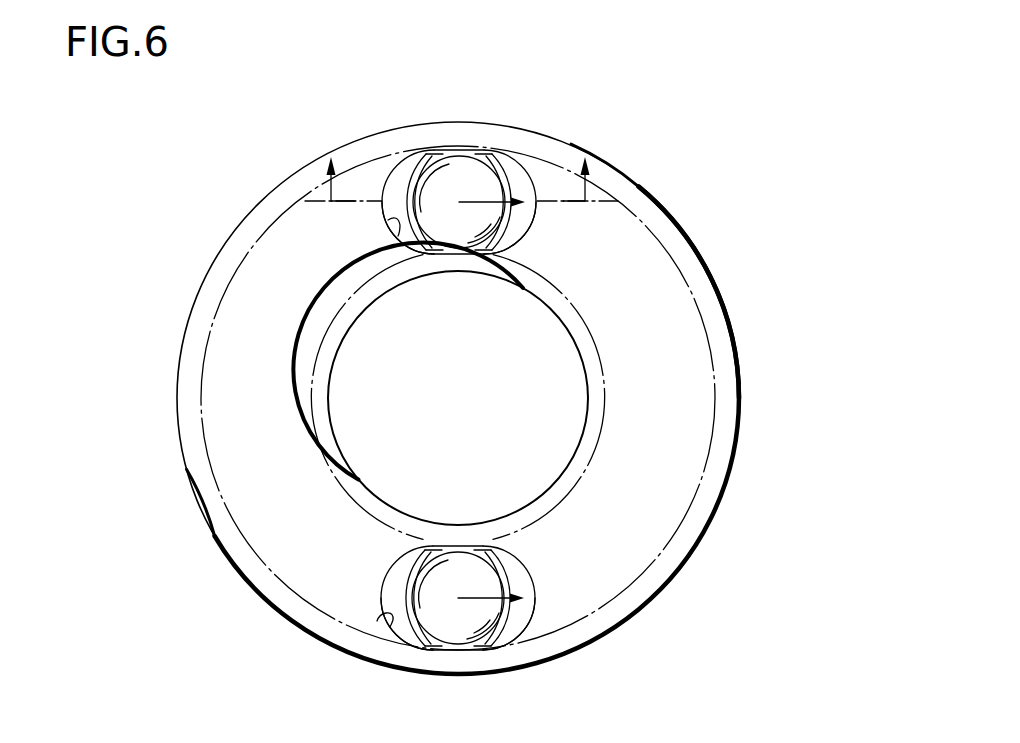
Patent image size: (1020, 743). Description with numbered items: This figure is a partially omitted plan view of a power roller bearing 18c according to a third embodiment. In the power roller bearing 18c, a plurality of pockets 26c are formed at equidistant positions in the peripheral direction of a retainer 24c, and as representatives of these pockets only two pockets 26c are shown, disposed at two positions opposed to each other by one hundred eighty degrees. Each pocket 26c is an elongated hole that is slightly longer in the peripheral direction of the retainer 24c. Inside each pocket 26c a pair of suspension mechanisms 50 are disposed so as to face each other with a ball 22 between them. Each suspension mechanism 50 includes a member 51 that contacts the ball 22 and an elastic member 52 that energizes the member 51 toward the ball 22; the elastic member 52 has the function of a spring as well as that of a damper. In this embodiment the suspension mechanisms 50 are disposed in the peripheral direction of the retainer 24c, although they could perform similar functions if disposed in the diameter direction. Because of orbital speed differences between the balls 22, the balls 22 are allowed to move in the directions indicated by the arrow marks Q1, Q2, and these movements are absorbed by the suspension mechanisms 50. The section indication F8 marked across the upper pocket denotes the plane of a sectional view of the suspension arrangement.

The power roller bearing 18c is at (728, 182).
The ball 22 is at (467, 167).
The retainer 24c is at (728, 488).
The pocket 26c is at (388, 220).
The suspension mechanism 50 is at (389, 172).
The member 51 is at (408, 177).
The elastic member 52 is at (405, 237).
The section line for FIG. 8 F8 is at (461, 195).
The arrow mark Q1 is at (493, 197).
The arrow mark Q2 is at (488, 658).